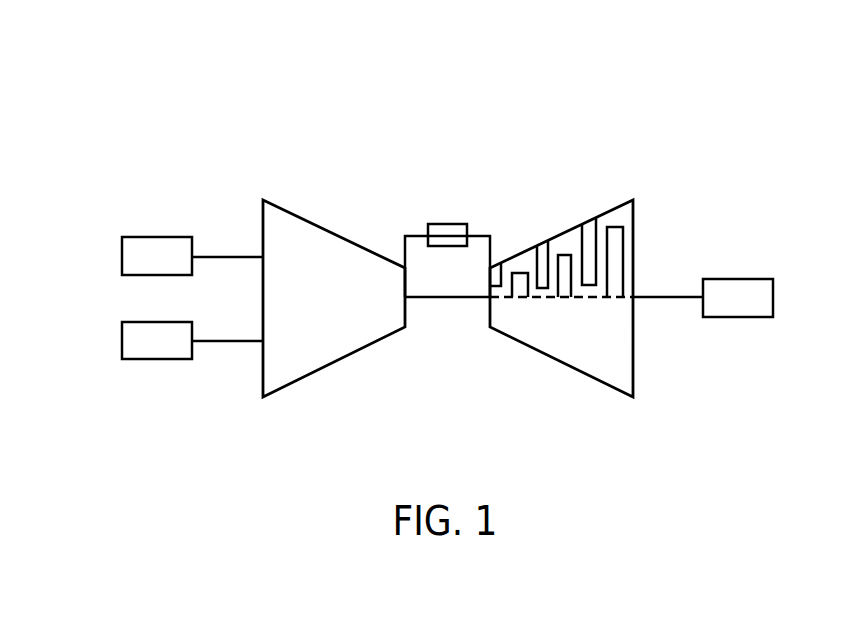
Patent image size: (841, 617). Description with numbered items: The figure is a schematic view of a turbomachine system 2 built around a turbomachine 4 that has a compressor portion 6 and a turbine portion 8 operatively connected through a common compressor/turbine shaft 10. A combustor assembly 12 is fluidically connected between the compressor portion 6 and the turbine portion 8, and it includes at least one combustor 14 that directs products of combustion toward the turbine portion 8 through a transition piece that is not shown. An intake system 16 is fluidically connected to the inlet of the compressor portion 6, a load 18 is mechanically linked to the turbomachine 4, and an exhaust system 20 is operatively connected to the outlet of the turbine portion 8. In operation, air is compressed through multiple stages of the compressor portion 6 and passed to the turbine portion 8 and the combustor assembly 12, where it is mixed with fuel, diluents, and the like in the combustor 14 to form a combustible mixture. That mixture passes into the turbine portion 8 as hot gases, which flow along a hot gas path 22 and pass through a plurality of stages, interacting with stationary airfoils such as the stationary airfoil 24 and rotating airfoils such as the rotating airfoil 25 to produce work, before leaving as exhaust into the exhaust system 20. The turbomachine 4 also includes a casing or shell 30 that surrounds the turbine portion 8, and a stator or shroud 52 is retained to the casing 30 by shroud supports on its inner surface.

The turbomachine system 2 is at (766, 147).
The turbomachine 4 is at (645, 429).
The compressor portion 6 is at (275, 374).
The turbine portion 8 is at (618, 367).
The common compressor/turbine shaft 10 is at (447, 300).
The combustor assembly 12 is at (405, 193).
The combustor 14 is at (450, 224).
The intake system 16 is at (157, 236).
The load 18 is at (155, 360).
The exhaust system 20 is at (737, 279).
The hot gas path 22 is at (628, 235).
The stationary airfoil 24 is at (540, 260).
The rotating airfoil 25 is at (561, 288).
The casing 30 is at (559, 382).
The shroud 52 is at (564, 242).